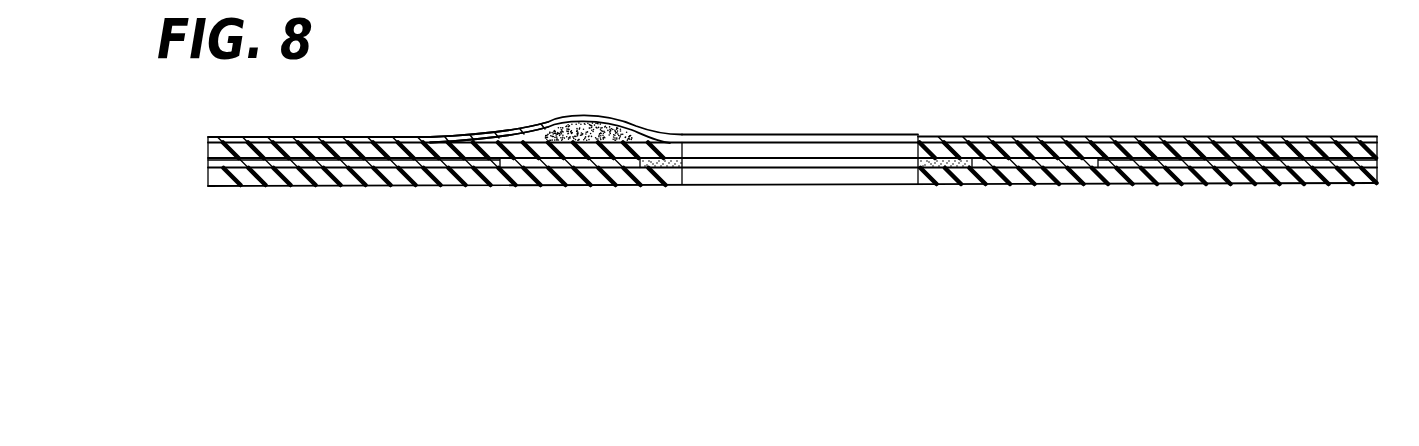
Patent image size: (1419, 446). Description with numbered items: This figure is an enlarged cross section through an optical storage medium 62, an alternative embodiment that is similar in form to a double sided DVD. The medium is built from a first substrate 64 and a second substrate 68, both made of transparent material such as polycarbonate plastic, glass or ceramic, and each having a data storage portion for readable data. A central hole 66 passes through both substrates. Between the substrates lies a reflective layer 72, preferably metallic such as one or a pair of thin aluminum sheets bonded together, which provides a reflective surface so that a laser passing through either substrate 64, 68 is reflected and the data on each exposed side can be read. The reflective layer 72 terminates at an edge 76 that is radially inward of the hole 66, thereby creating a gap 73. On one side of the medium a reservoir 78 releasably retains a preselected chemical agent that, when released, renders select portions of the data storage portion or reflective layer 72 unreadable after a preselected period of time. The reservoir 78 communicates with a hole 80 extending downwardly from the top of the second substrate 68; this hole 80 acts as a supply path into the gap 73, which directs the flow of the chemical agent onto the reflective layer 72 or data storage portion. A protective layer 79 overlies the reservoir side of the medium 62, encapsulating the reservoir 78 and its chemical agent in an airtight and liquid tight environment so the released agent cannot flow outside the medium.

The optical storage medium 62 is at (1193, 125).
The first substrate 64 is at (1080, 173).
The central hole 66 is at (774, 148).
The second substrate 68 is at (1097, 150).
The reflective layer 72 is at (1297, 183).
The gap 73 is at (1033, 163).
The edge 76 is at (1147, 167).
The reservoir 78 is at (572, 122).
The protective layer 79 is at (1015, 138).
The hole 80 is at (600, 146).